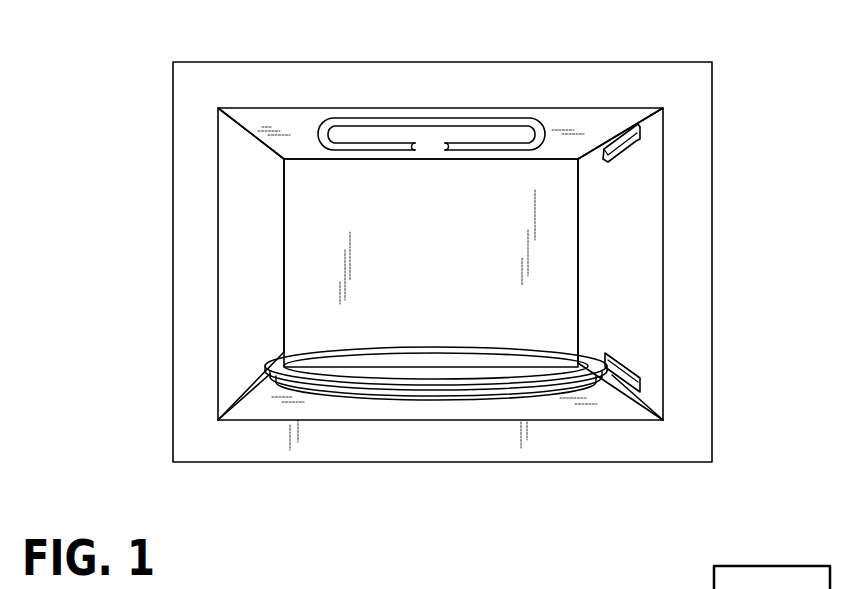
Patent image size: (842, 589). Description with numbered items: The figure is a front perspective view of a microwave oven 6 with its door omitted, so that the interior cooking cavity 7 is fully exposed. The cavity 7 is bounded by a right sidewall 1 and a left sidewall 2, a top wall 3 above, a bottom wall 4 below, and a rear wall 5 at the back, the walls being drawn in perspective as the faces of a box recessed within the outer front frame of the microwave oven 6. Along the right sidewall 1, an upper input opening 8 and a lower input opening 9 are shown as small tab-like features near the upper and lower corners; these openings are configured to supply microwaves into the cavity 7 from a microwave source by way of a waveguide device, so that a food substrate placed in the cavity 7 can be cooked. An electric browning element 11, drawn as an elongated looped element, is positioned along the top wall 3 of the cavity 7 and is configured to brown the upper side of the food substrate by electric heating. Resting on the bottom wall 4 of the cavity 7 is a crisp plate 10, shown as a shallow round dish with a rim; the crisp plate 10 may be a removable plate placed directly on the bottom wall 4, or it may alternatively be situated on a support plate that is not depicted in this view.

The right sidewall 1 is at (626, 237).
The sidewall 2 is at (257, 237).
The top wall 3 is at (298, 122).
The bottom wall 4 is at (270, 408).
The rear wall 5 is at (437, 237).
The microwave oven 6 is at (115, 106).
The cavity 7 is at (371, 297).
The upper input opening 8 is at (622, 140).
The lower input opening 9 is at (632, 372).
The crisp plate 10 is at (363, 395).
The electric browning element 11 is at (430, 120).